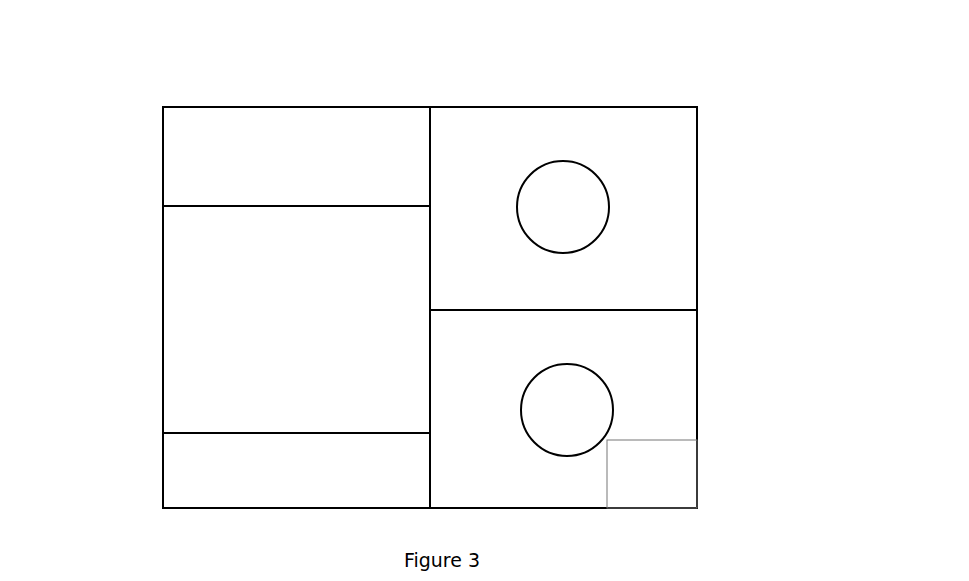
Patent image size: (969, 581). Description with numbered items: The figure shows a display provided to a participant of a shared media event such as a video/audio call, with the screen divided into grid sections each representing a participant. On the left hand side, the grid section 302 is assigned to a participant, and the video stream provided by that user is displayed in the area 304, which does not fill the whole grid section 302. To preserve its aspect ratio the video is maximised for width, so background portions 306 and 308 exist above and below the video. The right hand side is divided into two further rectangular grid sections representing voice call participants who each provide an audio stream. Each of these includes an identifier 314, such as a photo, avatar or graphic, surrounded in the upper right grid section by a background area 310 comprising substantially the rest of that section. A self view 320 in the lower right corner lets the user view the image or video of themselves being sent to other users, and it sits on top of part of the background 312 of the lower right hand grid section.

The grid section 302 is at (428, 88).
The area 304 is at (295, 320).
The background portion 306 is at (267, 162).
The background portion 308 is at (267, 468).
The background area 310 is at (648, 162).
The background 312 is at (663, 397).
The identifier 314 is at (595, 240).
The self view 320 is at (652, 475).